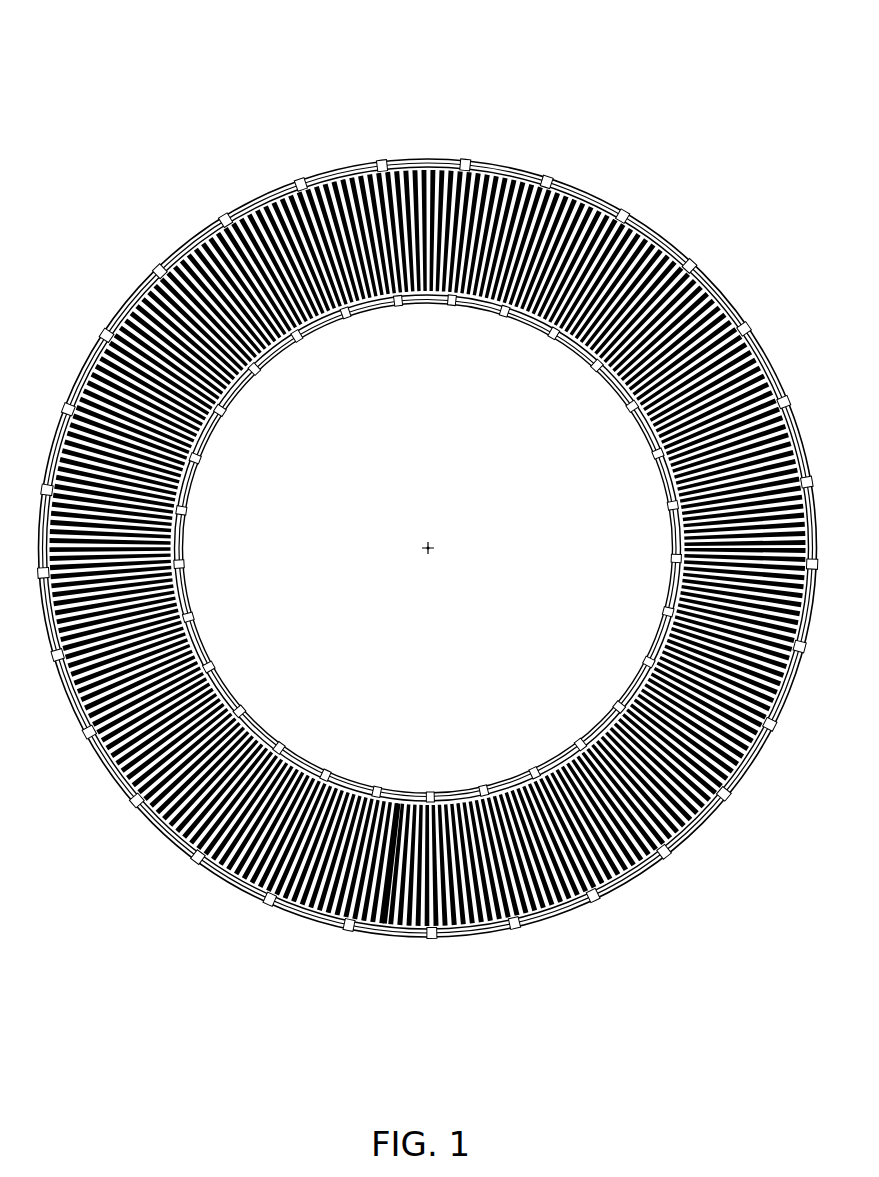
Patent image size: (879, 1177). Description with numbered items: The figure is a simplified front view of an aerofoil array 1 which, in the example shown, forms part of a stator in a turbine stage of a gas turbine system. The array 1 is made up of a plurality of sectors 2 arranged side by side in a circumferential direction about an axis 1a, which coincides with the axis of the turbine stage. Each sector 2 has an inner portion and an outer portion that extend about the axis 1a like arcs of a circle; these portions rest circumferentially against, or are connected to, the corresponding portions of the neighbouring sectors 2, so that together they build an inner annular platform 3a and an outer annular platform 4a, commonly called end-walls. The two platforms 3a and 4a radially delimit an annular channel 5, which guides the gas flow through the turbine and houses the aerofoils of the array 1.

The aerofoil array 1 is at (428, 517).
The axis 1a is at (421, 542).
The sector 2 is at (428, 575).
The inner annular platform 3a is at (340, 768).
The outer annular platform 4a is at (434, 929).
The annular channel 5 is at (390, 804).